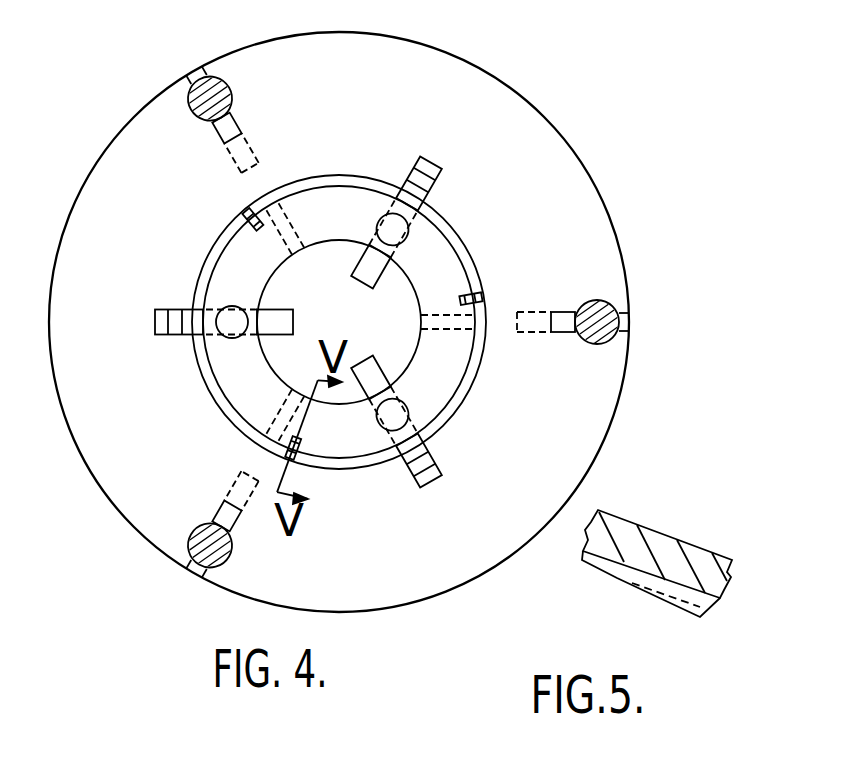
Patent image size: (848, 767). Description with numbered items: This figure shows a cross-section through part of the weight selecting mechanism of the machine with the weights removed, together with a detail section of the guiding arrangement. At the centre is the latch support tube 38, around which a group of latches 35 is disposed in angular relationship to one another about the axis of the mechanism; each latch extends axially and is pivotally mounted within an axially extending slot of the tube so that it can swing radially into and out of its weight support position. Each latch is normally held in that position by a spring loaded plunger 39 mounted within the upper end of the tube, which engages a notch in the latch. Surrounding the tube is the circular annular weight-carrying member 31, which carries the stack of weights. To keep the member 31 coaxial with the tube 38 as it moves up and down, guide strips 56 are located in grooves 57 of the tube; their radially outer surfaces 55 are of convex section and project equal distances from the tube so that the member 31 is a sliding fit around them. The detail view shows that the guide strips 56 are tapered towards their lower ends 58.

In FIG. 4, the weight-carrying member 31 is at (522, 220).
In FIG. 4, the latches 35 is at (433, 162).
In FIG. 4, the latch support tube 38 is at (317, 237).
In FIG. 4, the spring loaded plunger 39 is at (405, 236).
In FIG. 4, the radially outer surfaces 55 is at (244, 217).
In FIG. 4, the guide strips 56 is at (249, 222).
In FIG. 5, the guide strips 56 is at (652, 597).
In FIG. 4, the grooves 57 is at (254, 229).
In FIG. 5, the grooves 57 is at (633, 531).
In FIG. 5, the lower ends 58 is at (583, 556).